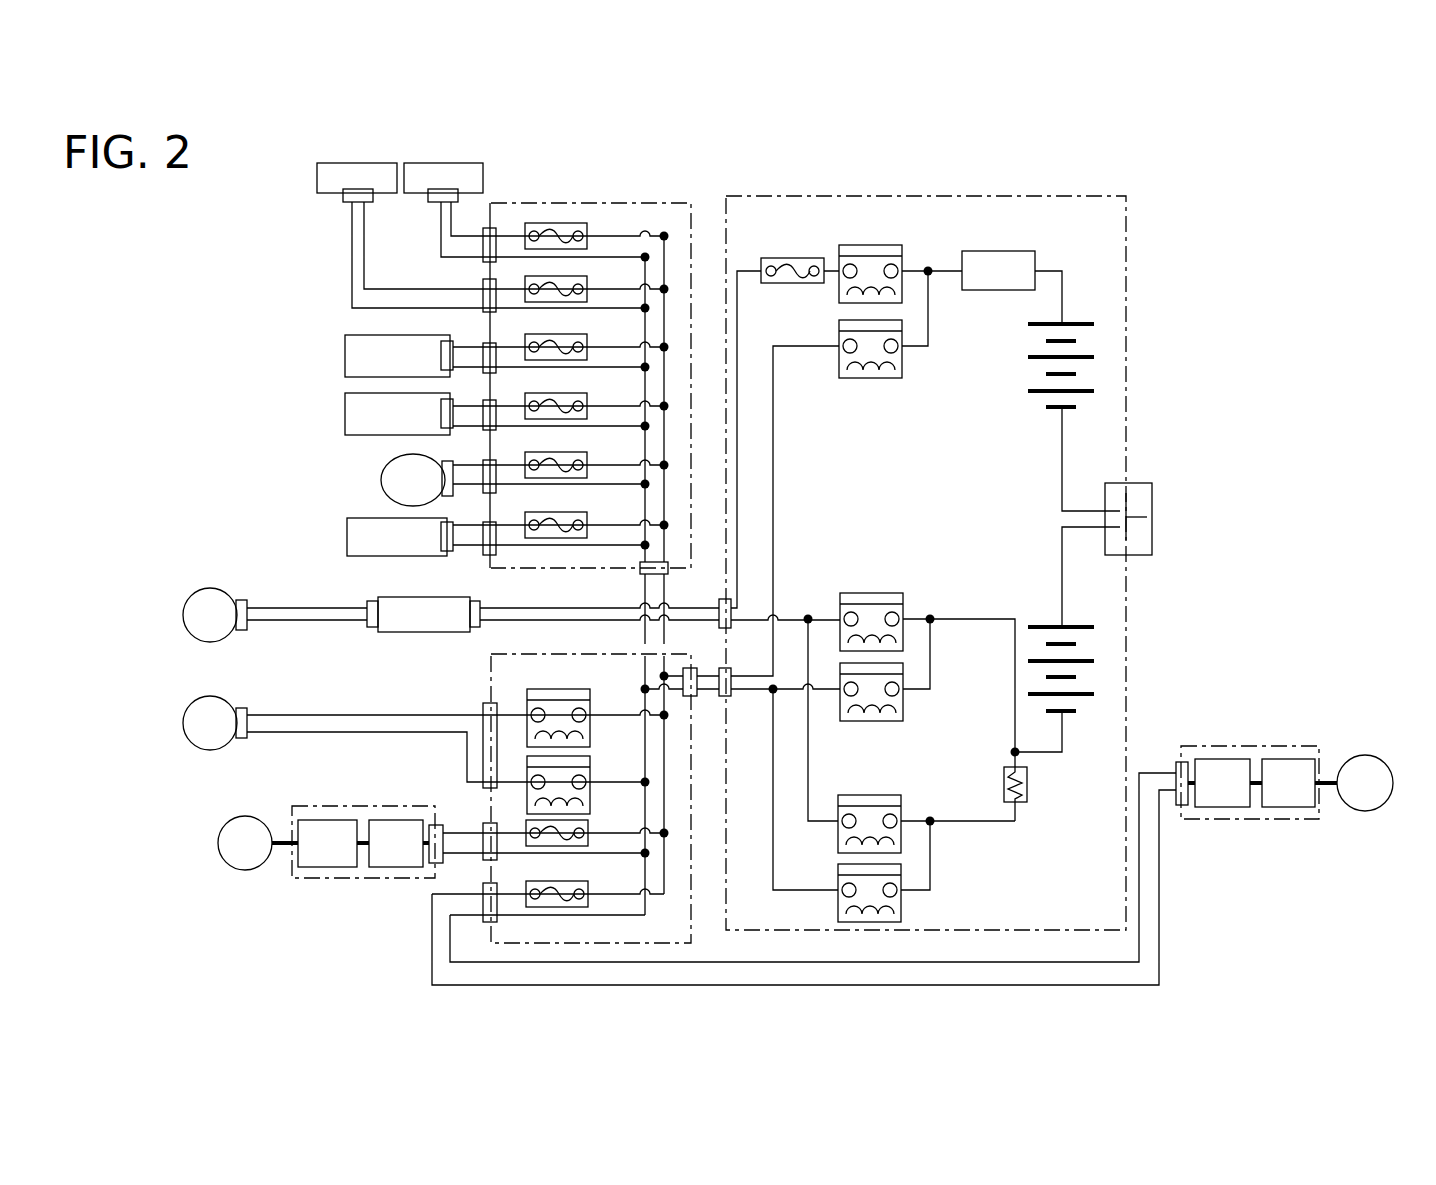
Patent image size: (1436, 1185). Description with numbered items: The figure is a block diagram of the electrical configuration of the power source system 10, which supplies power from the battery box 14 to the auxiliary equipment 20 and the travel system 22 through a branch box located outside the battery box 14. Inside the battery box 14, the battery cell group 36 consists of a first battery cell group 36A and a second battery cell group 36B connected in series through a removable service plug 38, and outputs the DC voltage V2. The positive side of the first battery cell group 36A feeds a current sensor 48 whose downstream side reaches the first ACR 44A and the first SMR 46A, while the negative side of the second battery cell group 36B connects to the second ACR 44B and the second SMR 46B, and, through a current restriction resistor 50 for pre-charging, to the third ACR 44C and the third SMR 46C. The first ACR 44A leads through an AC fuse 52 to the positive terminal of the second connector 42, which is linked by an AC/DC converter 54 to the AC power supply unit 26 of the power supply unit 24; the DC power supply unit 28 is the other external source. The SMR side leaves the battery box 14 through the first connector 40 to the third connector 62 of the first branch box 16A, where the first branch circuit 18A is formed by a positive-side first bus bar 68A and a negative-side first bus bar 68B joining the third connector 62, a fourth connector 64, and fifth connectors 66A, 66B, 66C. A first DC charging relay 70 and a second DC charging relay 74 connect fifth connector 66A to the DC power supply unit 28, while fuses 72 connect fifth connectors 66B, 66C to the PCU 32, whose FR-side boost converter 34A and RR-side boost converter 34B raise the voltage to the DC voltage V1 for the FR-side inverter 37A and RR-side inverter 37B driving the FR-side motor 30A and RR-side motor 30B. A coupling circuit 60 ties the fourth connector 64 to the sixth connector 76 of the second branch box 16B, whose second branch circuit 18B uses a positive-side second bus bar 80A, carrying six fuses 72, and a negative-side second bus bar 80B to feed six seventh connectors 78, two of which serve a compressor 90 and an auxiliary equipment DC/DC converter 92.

The power source system 10 is at (1222, 228).
The battery box 14 is at (1127, 358).
The first branch box 16A is at (553, 945).
The second branch box 16B is at (571, 203).
The first branch circuit 18A is at (711, 848).
The second branch circuit 18B is at (695, 341).
The auxiliary equipment 20 is at (417, 170).
The travel system 22 is at (294, 846).
The power supply unit 24 is at (171, 669).
The AC power supply unit 26 is at (185, 613).
The DC power supply unit 28 is at (193, 713).
The FR-side motor 30A is at (218, 842).
The RR-side motor 30B is at (1373, 810).
The PCU 32 is at (325, 846).
The FR-side boost converter 34A is at (377, 820).
The RR-side boost converter 34B is at (1213, 807).
The battery cell group 36 is at (1176, 517).
The first battery cell group 36A is at (1105, 405).
The second battery cell group 36B is at (1105, 643).
The FR-side inverter 37A is at (302, 820).
The RR-side inverter 37B is at (1288, 759).
The service plug 38 is at (1152, 527).
The first connector 40 is at (727, 697).
The second connector 42 is at (740, 597).
The first ACR 44A is at (863, 246).
The second ACR 44B is at (863, 594).
The third ACR 44C is at (898, 851).
The first SMR 46A is at (853, 378).
The second SMR 46B is at (860, 722).
The third SMR 46C is at (893, 918).
The current sensor 48 is at (983, 252).
The current restriction resistor 50 is at (1027, 777).
The AC fuse 52 is at (802, 259).
The AC/DC converter 54 is at (383, 598).
The coupling circuit 60 is at (643, 630).
The third connector 62 is at (697, 697).
The fourth connector 64 is at (667, 715).
The fifth connector 66A is at (490, 703).
The fifth connector 66B is at (483, 862).
The fifth connector 66C is at (483, 920).
The positive-side first bus bar 68A is at (665, 894).
The negative-side first bus bar 68B is at (645, 917).
The first DC charging relay 70 is at (525, 728).
The fuse 72 is at (527, 337).
The second DC charging relay 74 is at (525, 762).
The sixth connector 76 is at (678, 562).
The seventh connector 78 is at (486, 343).
The positive-side second bus bar 80A is at (662, 236).
The negative-side second bus bar 80B is at (660, 359).
The compressor 90 is at (381, 477).
The auxiliary equipment DC/DC converter 92 is at (347, 535).
The DC voltage V1 is at (363, 848).
The DC voltage V2 is at (1062, 296).